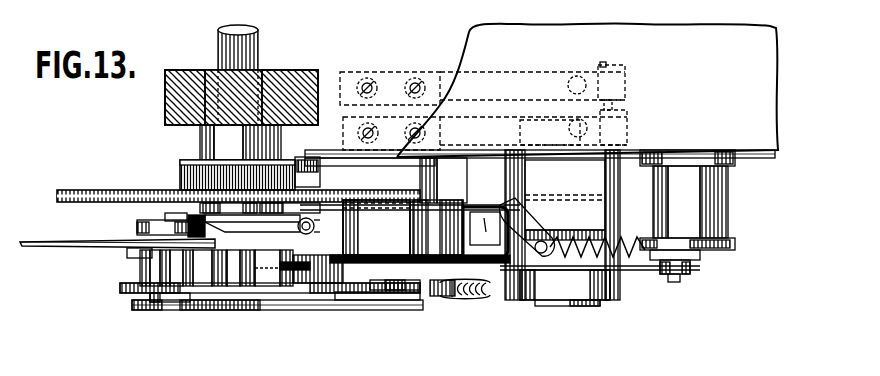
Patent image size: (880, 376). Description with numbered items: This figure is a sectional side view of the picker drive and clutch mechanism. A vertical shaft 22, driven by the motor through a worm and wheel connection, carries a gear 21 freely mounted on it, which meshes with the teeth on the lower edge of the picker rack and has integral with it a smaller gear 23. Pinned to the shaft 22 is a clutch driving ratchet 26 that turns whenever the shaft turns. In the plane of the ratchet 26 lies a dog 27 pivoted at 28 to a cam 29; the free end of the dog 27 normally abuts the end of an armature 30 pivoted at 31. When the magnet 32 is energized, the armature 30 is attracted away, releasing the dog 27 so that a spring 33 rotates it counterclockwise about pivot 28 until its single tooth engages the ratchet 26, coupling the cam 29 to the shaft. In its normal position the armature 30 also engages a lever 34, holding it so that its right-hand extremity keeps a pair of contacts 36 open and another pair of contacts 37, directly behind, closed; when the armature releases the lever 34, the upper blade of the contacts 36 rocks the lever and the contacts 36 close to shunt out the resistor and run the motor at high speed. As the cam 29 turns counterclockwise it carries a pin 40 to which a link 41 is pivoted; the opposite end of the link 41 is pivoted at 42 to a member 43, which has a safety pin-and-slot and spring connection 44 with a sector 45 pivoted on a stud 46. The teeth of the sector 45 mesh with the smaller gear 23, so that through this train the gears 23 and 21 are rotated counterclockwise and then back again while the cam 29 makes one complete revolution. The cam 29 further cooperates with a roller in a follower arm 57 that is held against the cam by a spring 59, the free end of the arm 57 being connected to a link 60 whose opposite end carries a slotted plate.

The gear 21 is at (87, 190).
The shaft 22 is at (258, 52).
The smaller gear 23 is at (181, 164).
The clutch driving ratchet 26 is at (205, 223).
The dog 27 is at (137, 229).
The pivot 28 is at (167, 215).
The cam 29 is at (120, 285).
The armature 30 is at (376, 227).
The pivot 31 is at (447, 173).
The magnet 32 is at (483, 287).
The spring 33 is at (284, 272).
The lever 34 is at (492, 206).
The contacts 36 is at (627, 125).
The contacts 37 is at (625, 88).
The pin 40 is at (157, 296).
The link 41 is at (282, 310).
The pivot 42 is at (388, 290).
The member 43 is at (512, 268).
The safety pin-and-slot and spring connection 44 is at (627, 240).
The sector 45 is at (680, 160).
The stud 46 is at (550, 307).
The follower arm 57 is at (210, 287).
The spring 59 is at (461, 297).
The link 60 is at (58, 243).